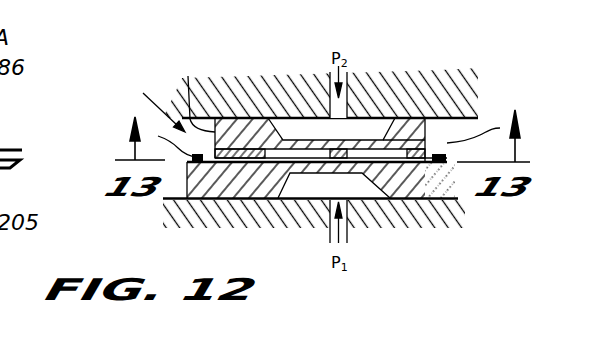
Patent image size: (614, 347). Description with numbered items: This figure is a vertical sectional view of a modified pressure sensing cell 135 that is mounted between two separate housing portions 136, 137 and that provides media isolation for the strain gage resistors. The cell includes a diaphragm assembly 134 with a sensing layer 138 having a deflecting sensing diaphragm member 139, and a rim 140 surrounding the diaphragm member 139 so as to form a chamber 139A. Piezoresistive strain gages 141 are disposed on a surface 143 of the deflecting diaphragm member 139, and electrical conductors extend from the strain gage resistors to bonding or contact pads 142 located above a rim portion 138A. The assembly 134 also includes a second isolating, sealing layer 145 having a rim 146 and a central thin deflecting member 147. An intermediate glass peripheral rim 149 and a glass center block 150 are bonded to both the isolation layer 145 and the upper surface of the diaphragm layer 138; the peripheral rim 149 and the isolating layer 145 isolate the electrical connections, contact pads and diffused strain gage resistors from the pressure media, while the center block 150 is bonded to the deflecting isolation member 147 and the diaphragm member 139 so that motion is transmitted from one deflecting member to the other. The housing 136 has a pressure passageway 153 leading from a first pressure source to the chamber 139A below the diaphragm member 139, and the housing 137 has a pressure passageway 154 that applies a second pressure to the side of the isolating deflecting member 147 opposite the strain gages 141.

The diaphragm assembly 134 is at (287, 172).
The pressure sensing cell 135 is at (151, 112).
The housing portion 136 is at (273, 232).
The housing portion 137 is at (237, 103).
The sensing layer 138 is at (443, 205).
The rim portion 138A is at (203, 218).
The deflecting sensing diaphragm member 139 is at (368, 205).
The chamber 139A is at (385, 205).
The rim 140 is at (448, 178).
The piezoresistive strain gages 141 is at (387, 118).
The bonding or contact pads 142 is at (183, 167).
The surface 143 is at (398, 138).
The isolating, sealing layer 145 is at (189, 92).
The rim 146 is at (241, 127).
The central thin deflecting member 147 is at (309, 112).
The intermediate glass peripheral rim 149 is at (455, 108).
The glass center block 150 is at (320, 203).
The pressure passageway 153 is at (348, 210).
The pressure passageway 154 is at (347, 118).